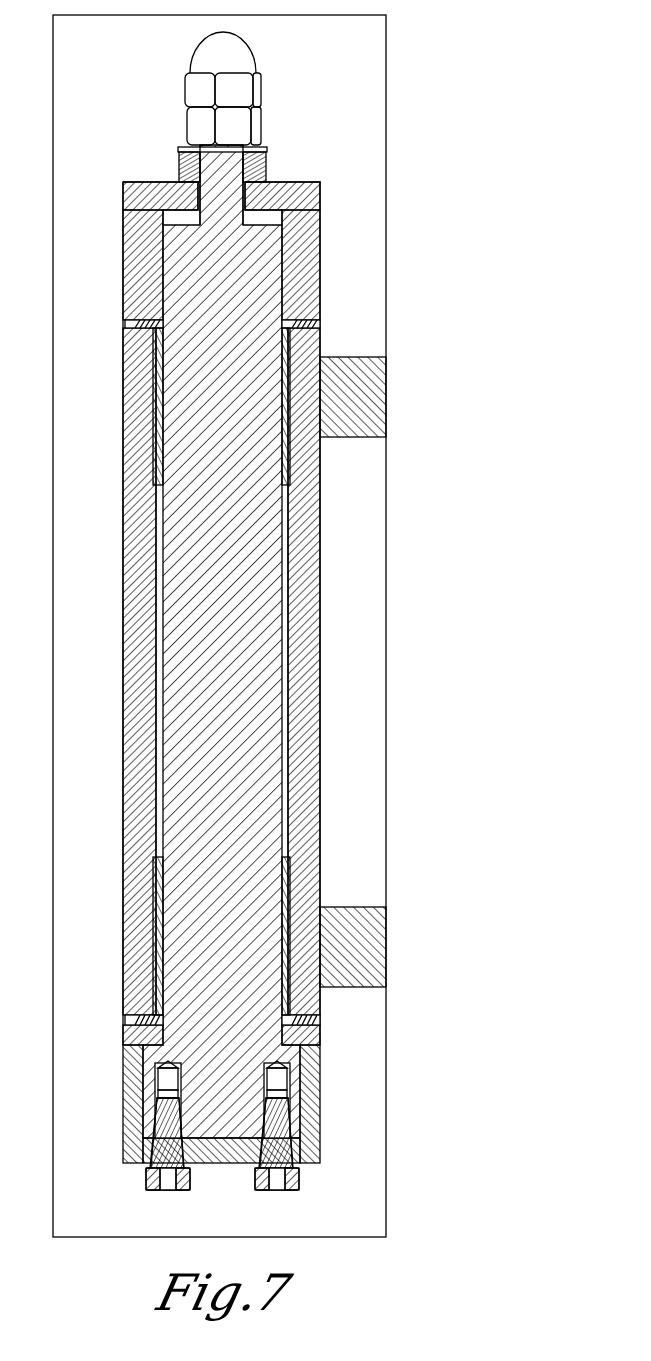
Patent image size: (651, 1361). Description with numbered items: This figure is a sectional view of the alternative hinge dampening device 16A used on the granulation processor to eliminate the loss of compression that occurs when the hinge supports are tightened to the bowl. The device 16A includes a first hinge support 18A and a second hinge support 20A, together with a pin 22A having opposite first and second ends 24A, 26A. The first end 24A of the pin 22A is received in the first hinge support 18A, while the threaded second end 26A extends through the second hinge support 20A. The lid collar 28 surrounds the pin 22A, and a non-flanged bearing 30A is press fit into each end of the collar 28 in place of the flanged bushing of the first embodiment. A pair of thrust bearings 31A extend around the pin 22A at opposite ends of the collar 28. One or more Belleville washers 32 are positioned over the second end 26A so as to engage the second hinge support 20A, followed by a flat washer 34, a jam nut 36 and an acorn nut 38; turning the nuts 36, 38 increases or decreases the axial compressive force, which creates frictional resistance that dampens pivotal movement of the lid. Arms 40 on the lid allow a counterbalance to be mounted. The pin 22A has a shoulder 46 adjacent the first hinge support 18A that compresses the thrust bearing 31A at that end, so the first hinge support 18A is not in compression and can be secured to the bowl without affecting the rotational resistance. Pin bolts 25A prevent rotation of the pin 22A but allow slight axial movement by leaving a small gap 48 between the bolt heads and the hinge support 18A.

The alternative hinge dampening device 16A is at (433, 312).
The first hinge support 18A is at (310, 1084).
The second hinge support 20A is at (315, 232).
The pin 22A is at (205, 600).
The first end 24A is at (213, 1108).
The pin bolts or screws 25A is at (158, 1190).
The second end 26A is at (180, 161).
The lid collar 28 is at (320, 578).
The non-flanged bearing 30A is at (158, 431).
The thrust bearings 31A is at (132, 324).
The Belleville washers 32 is at (265, 162).
The flat washer 34 is at (182, 148).
The jam nut 36 is at (258, 119).
The acorn nut 38 is at (232, 48).
The arms 40 is at (382, 382).
The shoulder 46 is at (305, 1036).
The small gap 48 is at (143, 1165).